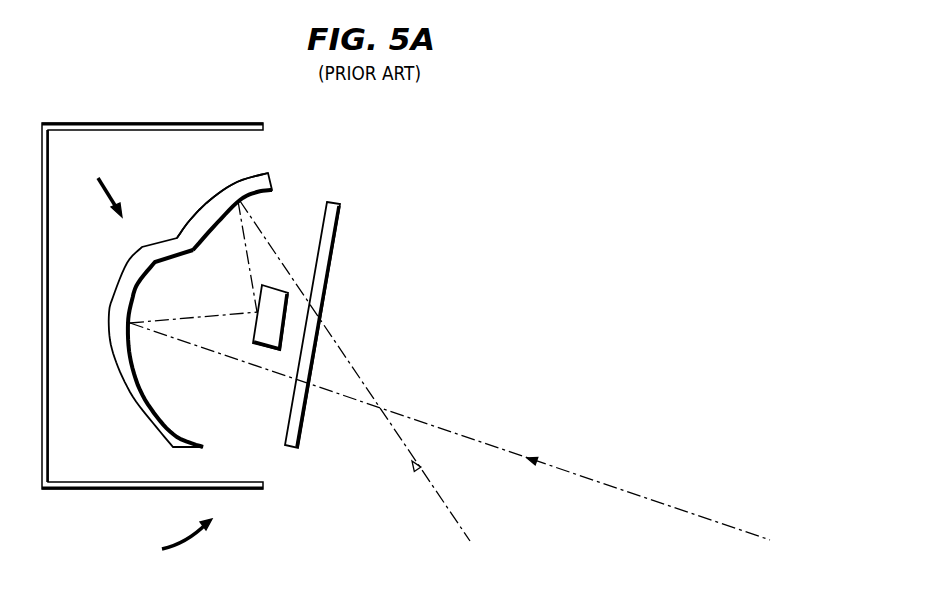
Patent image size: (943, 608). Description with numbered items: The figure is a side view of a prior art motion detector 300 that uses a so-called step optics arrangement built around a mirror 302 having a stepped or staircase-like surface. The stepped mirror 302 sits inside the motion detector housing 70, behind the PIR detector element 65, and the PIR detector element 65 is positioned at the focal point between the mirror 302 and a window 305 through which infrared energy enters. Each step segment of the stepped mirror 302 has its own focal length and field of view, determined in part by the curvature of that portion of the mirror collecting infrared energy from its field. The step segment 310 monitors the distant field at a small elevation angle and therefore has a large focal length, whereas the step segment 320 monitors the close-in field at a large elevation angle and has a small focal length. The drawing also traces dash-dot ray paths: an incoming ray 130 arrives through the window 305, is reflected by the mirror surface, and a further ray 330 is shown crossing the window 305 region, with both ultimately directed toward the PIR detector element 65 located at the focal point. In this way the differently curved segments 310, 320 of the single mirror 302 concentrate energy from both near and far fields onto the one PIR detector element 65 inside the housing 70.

The motion detector housing 70 is at (121, 125).
The stepped mirror 302 is at (98, 186).
The step segment 320 is at (197, 206).
The window 305 is at (342, 229).
The PIR detector element 65 is at (265, 342).
The step segment 310 is at (124, 402).
The incoming light ray 130 is at (438, 428).
The reflected ray 330 is at (396, 435).
The motion detector 300 is at (168, 541).